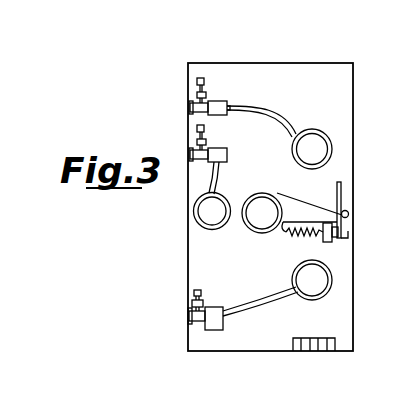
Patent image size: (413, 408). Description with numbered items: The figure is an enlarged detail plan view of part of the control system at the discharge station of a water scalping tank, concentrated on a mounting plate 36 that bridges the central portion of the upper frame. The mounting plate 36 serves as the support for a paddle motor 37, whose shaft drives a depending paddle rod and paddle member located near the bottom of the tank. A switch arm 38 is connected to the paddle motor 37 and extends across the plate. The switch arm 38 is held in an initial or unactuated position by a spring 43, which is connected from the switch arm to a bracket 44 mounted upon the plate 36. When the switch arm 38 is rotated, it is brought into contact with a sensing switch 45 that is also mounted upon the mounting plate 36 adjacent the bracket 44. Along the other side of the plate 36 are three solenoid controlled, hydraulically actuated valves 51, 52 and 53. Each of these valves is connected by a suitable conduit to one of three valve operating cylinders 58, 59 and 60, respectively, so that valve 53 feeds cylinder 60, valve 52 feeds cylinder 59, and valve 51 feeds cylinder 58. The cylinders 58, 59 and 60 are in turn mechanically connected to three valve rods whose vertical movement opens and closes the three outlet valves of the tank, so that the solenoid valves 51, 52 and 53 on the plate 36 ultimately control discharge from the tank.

The mounting plate 36 is at (338, 117).
The paddle motor 37 is at (262, 204).
The switch arm 38 is at (293, 207).
The spring 43 is at (293, 236).
The bracket 44 is at (349, 214).
The sensing switch 45 is at (330, 243).
The solenoid controlled hydraulically actuated valve 51 is at (218, 319).
The solenoid controlled hydraulically actuated valve 52 is at (221, 155).
The solenoid controlled hydraulically actuated valve 53 is at (221, 108).
The valve operating cylinder 58 is at (312, 292).
The valve operating cylinder 59 is at (216, 205).
The valve operating cylinder 60 is at (312, 140).